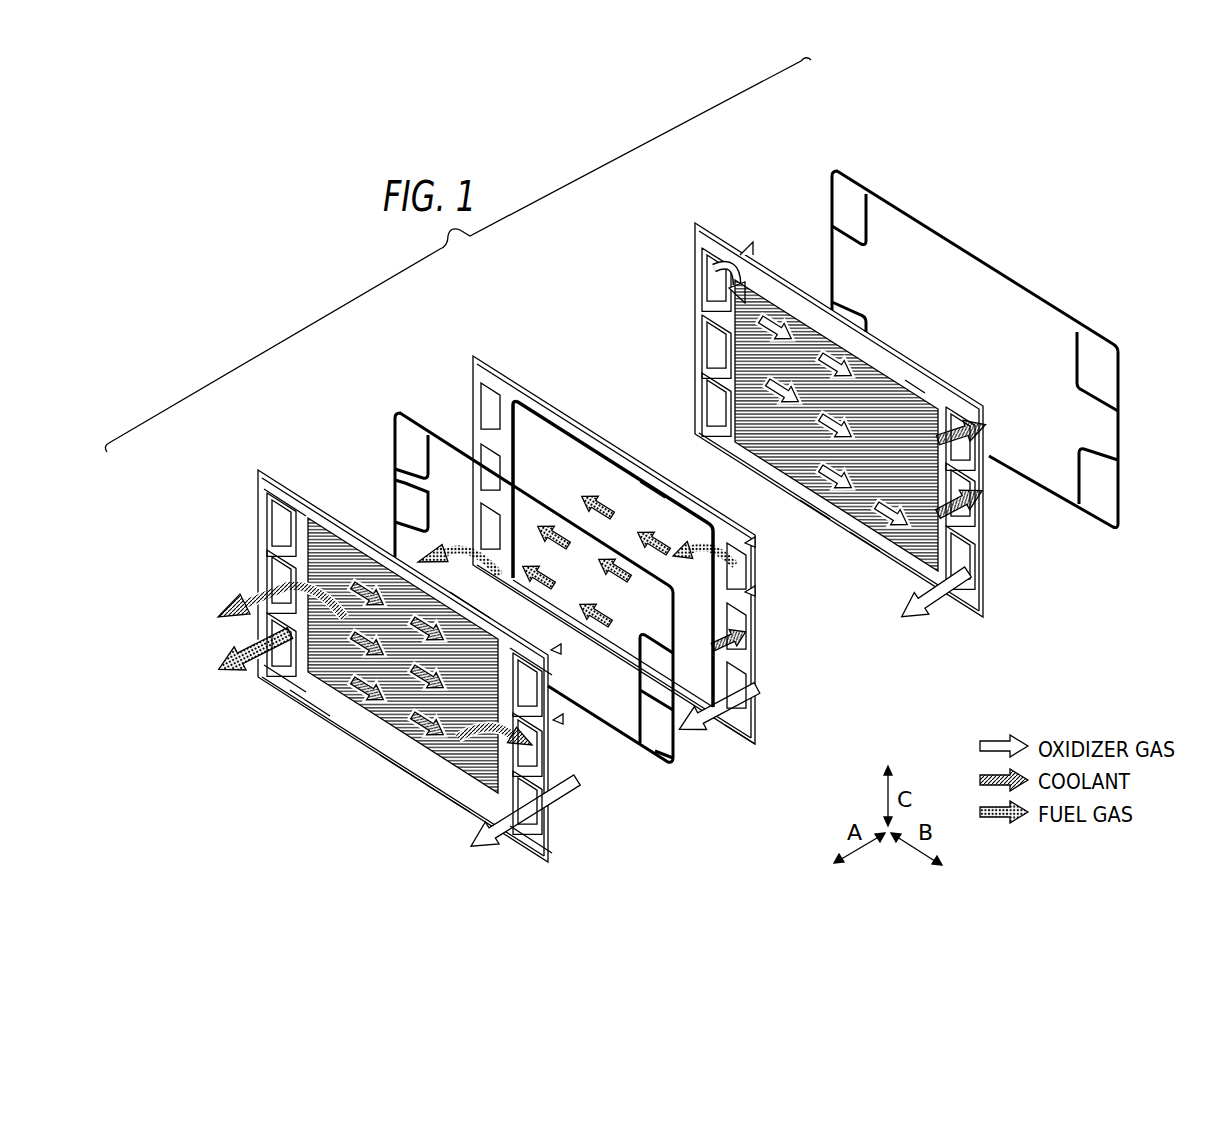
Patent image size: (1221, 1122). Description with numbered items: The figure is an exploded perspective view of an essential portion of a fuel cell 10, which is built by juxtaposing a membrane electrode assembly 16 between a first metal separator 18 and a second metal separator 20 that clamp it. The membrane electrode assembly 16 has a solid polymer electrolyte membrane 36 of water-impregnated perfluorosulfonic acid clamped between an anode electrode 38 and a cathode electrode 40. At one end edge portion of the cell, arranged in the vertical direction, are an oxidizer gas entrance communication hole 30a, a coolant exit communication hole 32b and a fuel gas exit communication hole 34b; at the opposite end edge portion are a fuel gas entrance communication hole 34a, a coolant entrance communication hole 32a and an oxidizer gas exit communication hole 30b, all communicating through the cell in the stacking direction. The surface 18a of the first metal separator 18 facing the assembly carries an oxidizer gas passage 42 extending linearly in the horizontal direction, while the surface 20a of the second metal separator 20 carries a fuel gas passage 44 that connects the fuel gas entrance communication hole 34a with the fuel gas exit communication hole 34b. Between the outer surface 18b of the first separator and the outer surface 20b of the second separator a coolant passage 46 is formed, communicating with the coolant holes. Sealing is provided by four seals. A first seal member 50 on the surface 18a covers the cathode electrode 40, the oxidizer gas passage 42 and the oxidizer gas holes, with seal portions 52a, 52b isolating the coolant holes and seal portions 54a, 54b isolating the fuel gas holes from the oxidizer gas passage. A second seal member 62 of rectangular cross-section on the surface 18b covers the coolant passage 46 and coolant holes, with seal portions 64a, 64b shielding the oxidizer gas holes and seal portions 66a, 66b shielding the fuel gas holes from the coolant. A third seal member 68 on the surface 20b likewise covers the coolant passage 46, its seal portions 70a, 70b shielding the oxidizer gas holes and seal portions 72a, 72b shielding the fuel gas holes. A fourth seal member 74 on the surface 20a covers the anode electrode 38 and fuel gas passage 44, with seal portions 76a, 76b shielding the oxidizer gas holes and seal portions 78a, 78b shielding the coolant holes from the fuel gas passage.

The fuel cell 10 is at (572, 263).
The membrane electrode assembly 16 is at (473, 356).
The first metal separator 18 is at (695, 223).
The surface of first metal separator 18a is at (816, 512).
The surface of first metal separator 18b is at (863, 545).
The second metal separator 20 is at (258, 470).
The surface of second metal separator 20a is at (437, 794).
The surface of second metal separator 20b is at (404, 769).
The oxidizer gas entrance communication hole 30a is at (481, 396).
The oxidizer gas exit communication hole 30b is at (746, 692).
The coolant entrance communication hole 32a is at (746, 638).
The coolant exit communication hole 32b is at (481, 452).
The fuel gas entrance communication hole 34a is at (746, 570).
The fuel gas exit communication hole 34b is at (500, 540).
The solid polymer electrolyte membrane 36 is at (740, 735).
The anode electrode 38 is at (549, 421).
The cathode electrode 40 is at (652, 488).
The oxidizer gas passage 42 is at (912, 382).
The fuel gas passage 44 is at (472, 607).
The coolant passage 46 is at (316, 521).
The first seal member 50 is at (790, 286).
The seal portion 52a is at (984, 512).
The seal portion 52b is at (701, 336).
The seal portion 54a is at (984, 441).
The seal portion 54b is at (701, 396).
The second seal member 62 is at (831, 171).
The seal portion 64a is at (850, 182).
The seal portion 64b is at (1085, 522).
The seal portion 66a is at (1082, 345).
The seal portion 66b is at (845, 305).
The third seal member 68 is at (312, 696).
The seal portion 70a is at (266, 497).
The seal portion 70b is at (519, 843).
The seal portion 72a is at (532, 656).
The seal portion 72b is at (270, 676).
The fourth seal member 74 is at (395, 413).
The seal portion 76a is at (394, 446).
The seal portion 76b is at (656, 763).
The seal portion 78a is at (676, 664).
The seal portion 78b is at (392, 502).